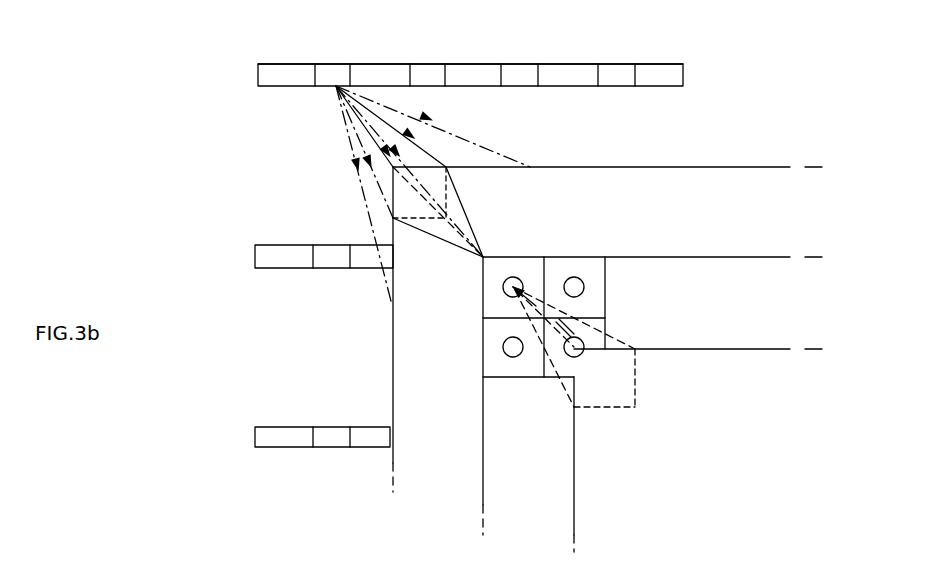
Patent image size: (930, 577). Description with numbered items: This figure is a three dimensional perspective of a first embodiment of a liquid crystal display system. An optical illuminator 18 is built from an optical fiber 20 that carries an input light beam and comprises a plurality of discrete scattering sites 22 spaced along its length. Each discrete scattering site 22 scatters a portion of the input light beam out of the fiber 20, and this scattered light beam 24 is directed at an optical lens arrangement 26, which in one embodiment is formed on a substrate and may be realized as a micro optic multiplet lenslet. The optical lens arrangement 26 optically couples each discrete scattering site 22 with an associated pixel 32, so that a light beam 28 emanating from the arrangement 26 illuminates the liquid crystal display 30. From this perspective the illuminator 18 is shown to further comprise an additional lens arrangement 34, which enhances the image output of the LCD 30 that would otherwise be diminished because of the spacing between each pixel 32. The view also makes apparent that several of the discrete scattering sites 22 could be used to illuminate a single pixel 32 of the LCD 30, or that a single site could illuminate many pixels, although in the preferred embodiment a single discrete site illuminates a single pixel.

The optical illuminator 18 is at (258, 75).
The optical fiber 20 is at (292, 64).
The discrete scattering sites 22 is at (335, 65).
The scattered light beam 24 is at (346, 124).
The optical lens arrangement 26 is at (750, 222).
The light beam 28 is at (448, 218).
The liquid crystal display 30 is at (750, 309).
The pixel 32 is at (494, 298).
The additional lens arrangement 34 is at (750, 401).